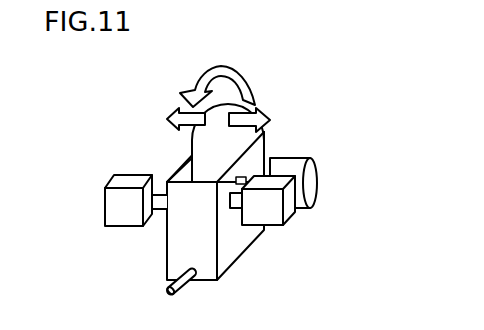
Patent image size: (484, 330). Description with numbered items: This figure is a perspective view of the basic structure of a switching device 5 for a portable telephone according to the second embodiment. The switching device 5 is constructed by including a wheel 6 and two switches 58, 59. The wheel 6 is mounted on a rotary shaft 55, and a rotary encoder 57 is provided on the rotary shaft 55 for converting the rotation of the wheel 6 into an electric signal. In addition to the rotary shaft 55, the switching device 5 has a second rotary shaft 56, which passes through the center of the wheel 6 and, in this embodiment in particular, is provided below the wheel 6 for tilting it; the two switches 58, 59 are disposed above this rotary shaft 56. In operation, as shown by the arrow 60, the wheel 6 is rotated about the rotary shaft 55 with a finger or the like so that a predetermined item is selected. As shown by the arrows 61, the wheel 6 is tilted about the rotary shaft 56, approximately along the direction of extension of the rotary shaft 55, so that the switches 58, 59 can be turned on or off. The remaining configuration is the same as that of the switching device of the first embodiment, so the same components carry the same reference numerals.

The switching device 5 is at (325, 216).
The wheel 6 is at (210, 146).
The rotary shaft 55 is at (243, 192).
The rotary shaft 56 is at (182, 287).
The rotary encoder 57 is at (309, 183).
The switch 58 is at (270, 208).
The switch 59 is at (123, 212).
The arrow 60 is at (198, 74).
The arrows 61 is at (173, 115).